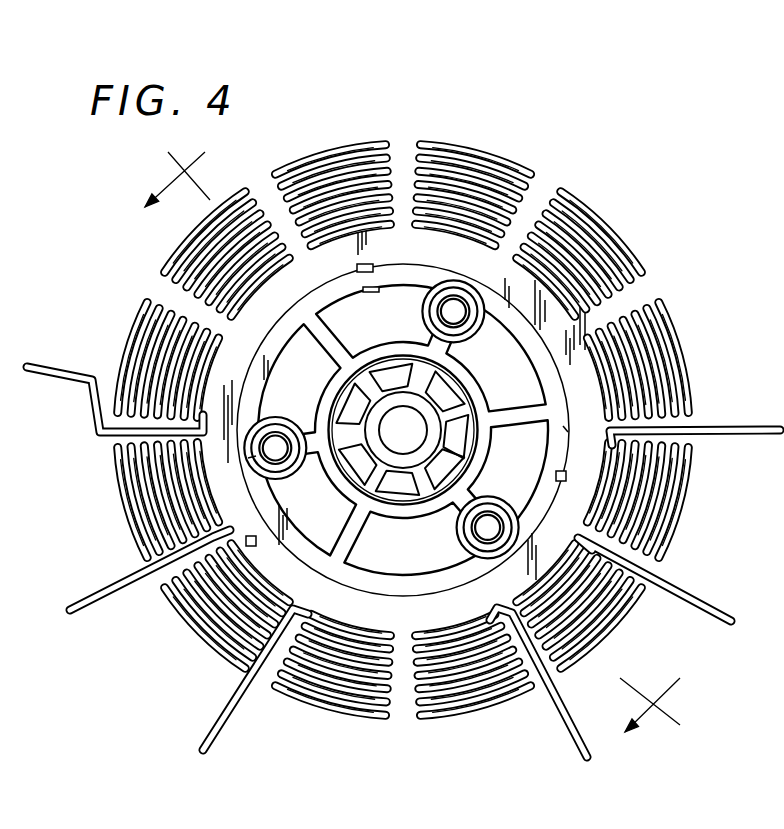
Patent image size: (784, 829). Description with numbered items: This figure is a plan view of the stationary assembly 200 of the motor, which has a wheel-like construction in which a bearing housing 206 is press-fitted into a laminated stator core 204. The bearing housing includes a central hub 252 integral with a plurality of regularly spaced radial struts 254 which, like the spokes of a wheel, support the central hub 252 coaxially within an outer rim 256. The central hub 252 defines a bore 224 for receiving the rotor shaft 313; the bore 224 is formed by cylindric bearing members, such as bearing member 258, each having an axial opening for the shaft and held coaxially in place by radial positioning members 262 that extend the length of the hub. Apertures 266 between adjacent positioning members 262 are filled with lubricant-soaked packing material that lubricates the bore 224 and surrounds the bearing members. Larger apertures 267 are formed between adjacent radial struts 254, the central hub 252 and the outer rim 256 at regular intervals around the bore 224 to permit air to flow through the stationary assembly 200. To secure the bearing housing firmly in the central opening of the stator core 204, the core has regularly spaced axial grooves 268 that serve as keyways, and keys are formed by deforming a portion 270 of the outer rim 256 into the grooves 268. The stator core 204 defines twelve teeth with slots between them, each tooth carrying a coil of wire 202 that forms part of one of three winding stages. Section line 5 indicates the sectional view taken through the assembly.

The section line 5- 5 is at (413, 433).
The stationary assembly 200 is at (687, 223).
The winding coils 202 is at (585, 240).
The laminated stator core 204 is at (577, 333).
The bearing housing 206 is at (503, 287).
The bore 224 is at (425, 415).
The central hub 252 is at (463, 404).
The radial struts 254 is at (445, 357).
The outer rim 256 is at (340, 293).
The cylindric bearing member 258 is at (377, 413).
The radial positioning members 262 is at (386, 380).
The apertures 266 is at (417, 475).
The apertures 267 is at (427, 558).
The axial grooves 268 is at (366, 265).
The deformed portion 270 is at (356, 268).
The rotor shaft 313 is at (395, 442).